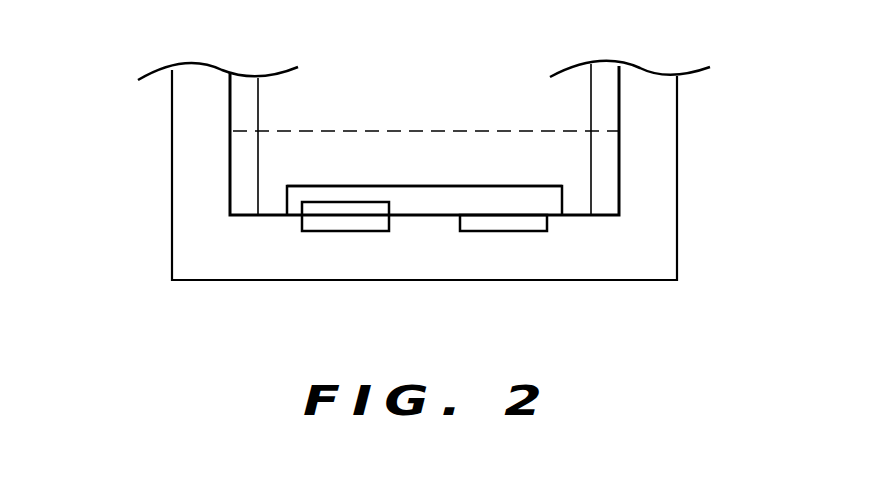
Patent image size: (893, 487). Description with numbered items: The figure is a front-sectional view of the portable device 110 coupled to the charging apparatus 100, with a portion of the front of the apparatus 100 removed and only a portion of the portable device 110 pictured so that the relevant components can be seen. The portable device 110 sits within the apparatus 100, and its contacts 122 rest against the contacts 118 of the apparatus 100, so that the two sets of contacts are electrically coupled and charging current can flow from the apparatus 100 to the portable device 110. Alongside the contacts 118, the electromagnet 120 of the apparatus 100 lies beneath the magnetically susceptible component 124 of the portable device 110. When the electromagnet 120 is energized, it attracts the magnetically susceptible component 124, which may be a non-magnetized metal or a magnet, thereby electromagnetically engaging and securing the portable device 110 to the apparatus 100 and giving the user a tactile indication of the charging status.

The apparatus 100 is at (682, 234).
The portable device 110 is at (253, 113).
The contacts 118 is at (333, 231).
The electromagnet 120 is at (498, 231).
The contacts 122 is at (358, 188).
The magnetically susceptible component 124 is at (503, 187).